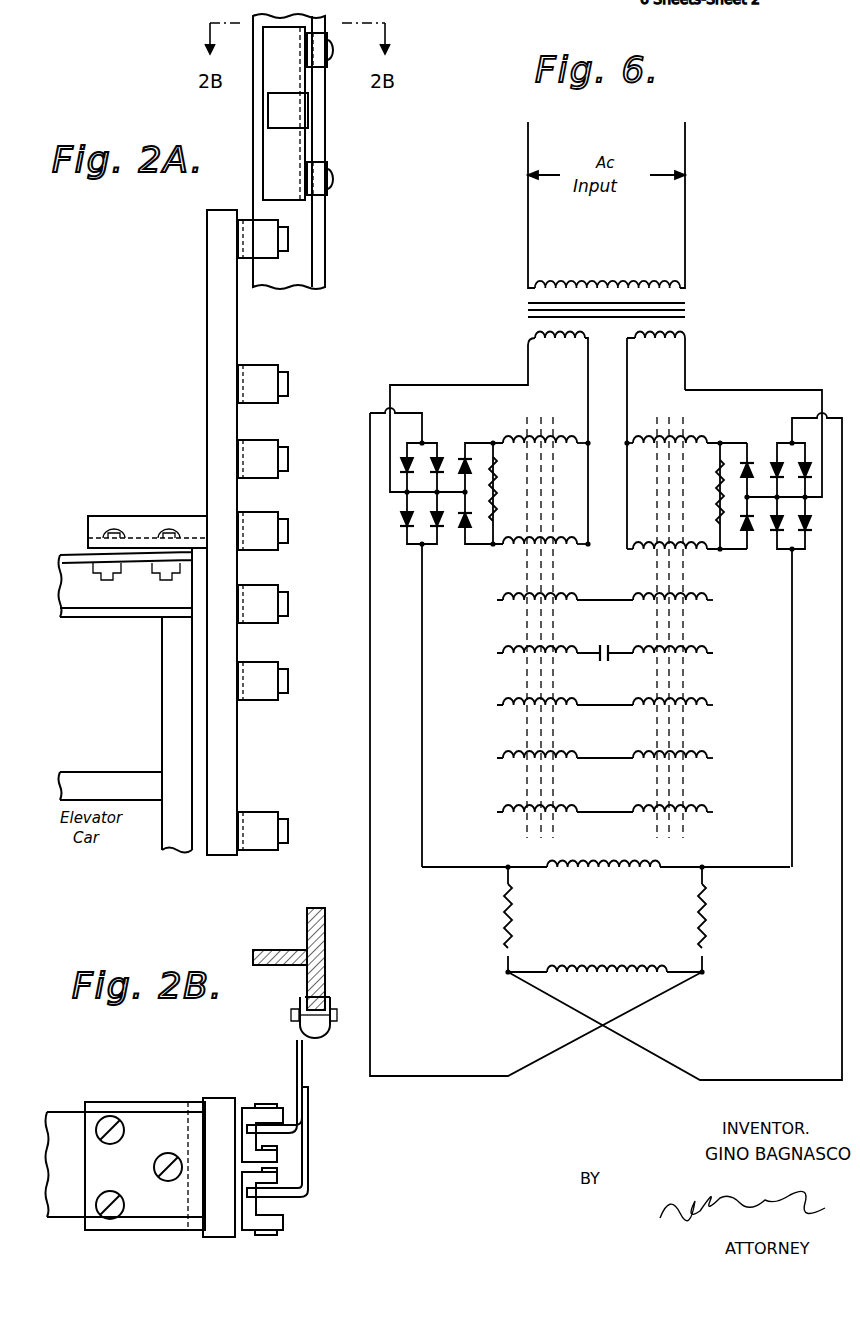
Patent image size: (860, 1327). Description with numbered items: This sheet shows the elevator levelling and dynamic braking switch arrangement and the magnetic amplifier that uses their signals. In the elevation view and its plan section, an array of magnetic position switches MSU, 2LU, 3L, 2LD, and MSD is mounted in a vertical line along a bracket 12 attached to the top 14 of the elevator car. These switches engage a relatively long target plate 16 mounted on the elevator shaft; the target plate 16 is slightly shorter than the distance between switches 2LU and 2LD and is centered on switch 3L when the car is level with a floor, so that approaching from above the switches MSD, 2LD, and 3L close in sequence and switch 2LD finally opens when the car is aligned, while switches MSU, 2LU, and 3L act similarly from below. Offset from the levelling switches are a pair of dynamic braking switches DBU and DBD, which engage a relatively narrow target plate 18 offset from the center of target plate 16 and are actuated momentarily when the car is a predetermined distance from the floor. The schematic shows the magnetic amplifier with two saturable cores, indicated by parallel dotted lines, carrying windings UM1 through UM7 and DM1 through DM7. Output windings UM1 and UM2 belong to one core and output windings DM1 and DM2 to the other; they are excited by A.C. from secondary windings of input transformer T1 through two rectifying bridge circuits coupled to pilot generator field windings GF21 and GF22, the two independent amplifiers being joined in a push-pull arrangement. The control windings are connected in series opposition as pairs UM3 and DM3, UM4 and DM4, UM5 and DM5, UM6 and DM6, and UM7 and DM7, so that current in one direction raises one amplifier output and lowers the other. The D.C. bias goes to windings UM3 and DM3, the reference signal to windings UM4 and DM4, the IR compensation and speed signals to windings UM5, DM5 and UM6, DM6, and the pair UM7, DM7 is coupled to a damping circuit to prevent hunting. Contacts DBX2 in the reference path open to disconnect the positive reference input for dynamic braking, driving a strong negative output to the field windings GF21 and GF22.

In FIG. 2A, the bracket 12 is at (222, 415).
In FIG. 2B, the bracket 12 is at (219, 1167).
In FIG. 2A, the top of elevator car 14 is at (125, 597).
In FIG. 2A, the target plate 16 is at (285, 162).
In FIG. 2B, the target plate 16 is at (284, 1139).
In FIG. 2A, the target plate 18 is at (290, 115).
In FIG. 2B, the target plate 18 is at (306, 1170).
In FIG. 2A, the up levelling switch MSU is at (258, 240).
In FIG. 2B, the up levelling switch MSU is at (252, 1105).
In FIG. 2A, the up levelling switch 2LU is at (262, 376).
In FIG. 2A, the dynamic braking switch DBU is at (262, 451).
In FIG. 2B, the dynamic braking switch DBU is at (268, 1245).
In FIG. 2A, the levelling switch 3L is at (265, 524).
In FIG. 2A, the dynamic braking switch DBD is at (265, 596).
In FIG. 2A, the down levelling switch 2LD is at (262, 672).
In FIG. 2A, the down levelling switch MSD is at (262, 818).
In FIG. 6, the A.C. input transformer T1 is at (690, 311).
In FIG. 6, the output winding UM1 is at (505, 441).
In FIG. 6, the output winding UM2 is at (506, 549).
In FIG. 6, the control winding UM3 is at (505, 604).
In FIG. 6, the control winding UM4 is at (505, 657).
In FIG. 6, the control winding UM5 is at (505, 709).
In FIG. 6, the control winding UM6 is at (505, 762).
In FIG. 6, the control winding UM7 is at (505, 815).
In FIG. 6, the output winding DM1 is at (706, 441).
In FIG. 6, the output winding DM2 is at (705, 553).
In FIG. 6, the control winding DM3 is at (705, 604).
In FIG. 6, the control winding DM4 is at (705, 657).
In FIG. 6, the control winding DM5 is at (705, 709).
In FIG. 6, the control winding DM6 is at (705, 762).
In FIG. 6, the control winding DM7 is at (705, 815).
In FIG. 6, the contacts DBX2 is at (607, 643).
In FIG. 6, the pilot generator field winding GF21 is at (580, 870).
In FIG. 6, the pilot generator field winding GF22 is at (618, 944).